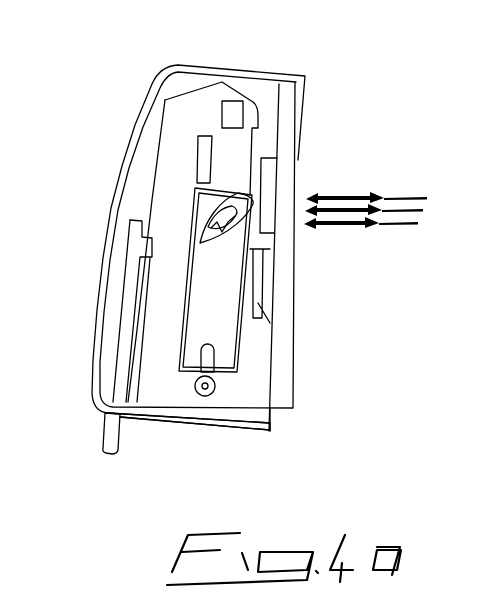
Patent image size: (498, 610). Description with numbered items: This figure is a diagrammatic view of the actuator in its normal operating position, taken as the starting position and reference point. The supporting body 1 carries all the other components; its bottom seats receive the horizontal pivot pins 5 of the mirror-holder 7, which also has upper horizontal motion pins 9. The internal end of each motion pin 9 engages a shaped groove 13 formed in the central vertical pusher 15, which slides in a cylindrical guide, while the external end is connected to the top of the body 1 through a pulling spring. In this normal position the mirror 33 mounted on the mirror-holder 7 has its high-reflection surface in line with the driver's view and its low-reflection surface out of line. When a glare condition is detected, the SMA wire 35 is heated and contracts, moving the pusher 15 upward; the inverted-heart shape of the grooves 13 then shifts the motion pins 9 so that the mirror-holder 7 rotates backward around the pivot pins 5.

The supporting body 1 is at (207, 105).
The motion pin 9 is at (143, 175).
The shaped groove 13 is at (250, 199).
The pusher 15 is at (228, 277).
The mirror 33 is at (283, 323).
The SMA wire 35 is at (205, 346).
The pivot pin 5 is at (195, 384).
The mirror-holder 7 is at (237, 390).